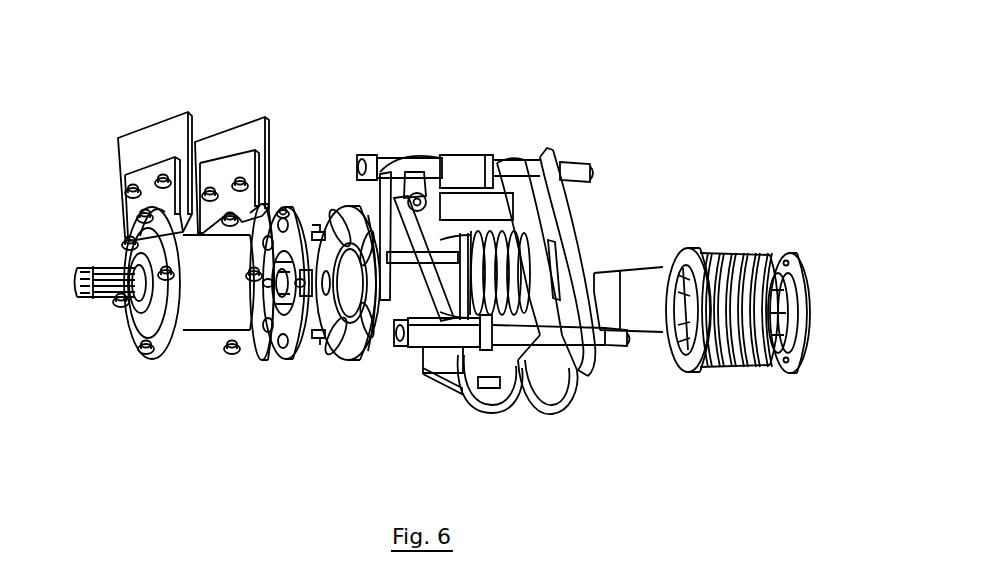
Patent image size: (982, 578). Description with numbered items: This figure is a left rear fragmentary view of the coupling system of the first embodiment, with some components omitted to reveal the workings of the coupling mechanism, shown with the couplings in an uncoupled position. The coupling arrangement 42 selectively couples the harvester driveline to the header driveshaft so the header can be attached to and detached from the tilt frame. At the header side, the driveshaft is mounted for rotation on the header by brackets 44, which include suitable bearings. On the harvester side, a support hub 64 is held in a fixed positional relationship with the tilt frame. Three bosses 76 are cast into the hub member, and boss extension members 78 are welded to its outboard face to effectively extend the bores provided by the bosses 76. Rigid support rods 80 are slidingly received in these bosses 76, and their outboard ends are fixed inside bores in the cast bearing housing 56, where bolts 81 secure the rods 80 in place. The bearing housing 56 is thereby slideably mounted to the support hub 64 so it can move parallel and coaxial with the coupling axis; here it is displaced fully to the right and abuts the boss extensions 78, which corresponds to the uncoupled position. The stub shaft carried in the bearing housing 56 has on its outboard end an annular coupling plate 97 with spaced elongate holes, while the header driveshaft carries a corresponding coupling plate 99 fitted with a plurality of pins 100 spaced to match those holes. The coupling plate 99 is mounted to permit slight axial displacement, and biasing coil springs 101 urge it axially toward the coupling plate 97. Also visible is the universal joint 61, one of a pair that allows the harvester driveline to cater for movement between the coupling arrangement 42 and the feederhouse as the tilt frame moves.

The coupling arrangement 42 is at (332, 160).
The brackets 44 is at (205, 308).
The bearing housing 56 is at (413, 165).
The universal joint 61 is at (773, 360).
The support hub 64 is at (553, 152).
The bosses 76 is at (512, 160).
The boss extension members 78 is at (462, 157).
The rigid support rods 80 is at (590, 160).
The bolts 81 is at (362, 163).
The annular coupling plate 97 is at (347, 367).
The coupling plate 99 is at (277, 353).
The pins 100 is at (322, 230).
The biasing coil springs 101 is at (283, 204).